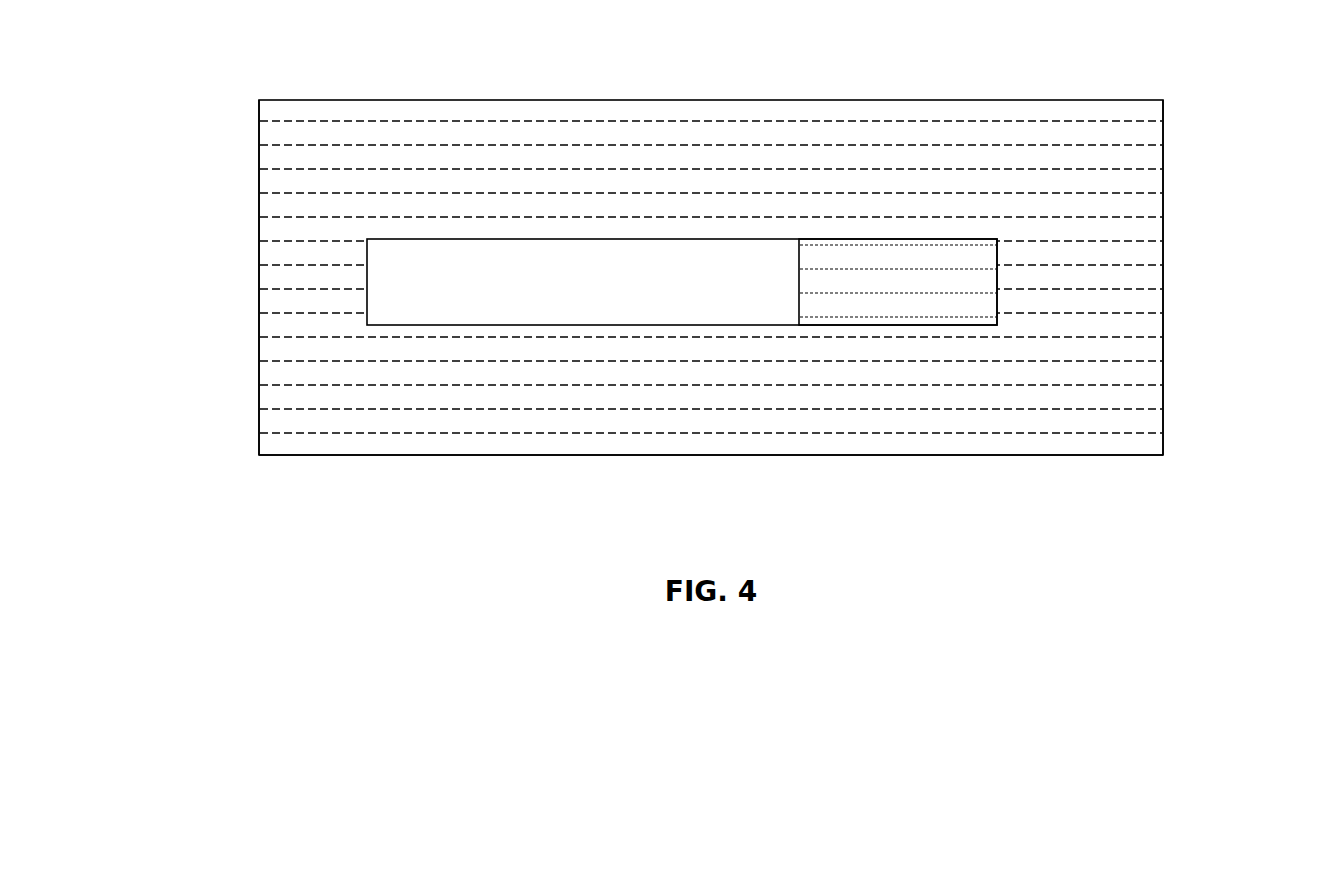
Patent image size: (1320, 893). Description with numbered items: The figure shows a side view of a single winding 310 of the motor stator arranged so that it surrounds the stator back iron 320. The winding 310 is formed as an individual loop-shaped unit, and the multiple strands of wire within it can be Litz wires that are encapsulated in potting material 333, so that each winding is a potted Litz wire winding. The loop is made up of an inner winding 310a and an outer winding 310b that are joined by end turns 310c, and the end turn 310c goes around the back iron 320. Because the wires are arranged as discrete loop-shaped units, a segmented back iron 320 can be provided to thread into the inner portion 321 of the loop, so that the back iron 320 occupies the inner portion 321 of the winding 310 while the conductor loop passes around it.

The winding 310 is at (1024, 80).
The potting material 333 is at (270, 157).
The outer winding 310b is at (345, 181).
The inner winding 310a is at (581, 425).
The end turn 310c is at (1164, 351).
The inner portion 321 is at (391, 295).
The stator back iron 320 is at (845, 257).